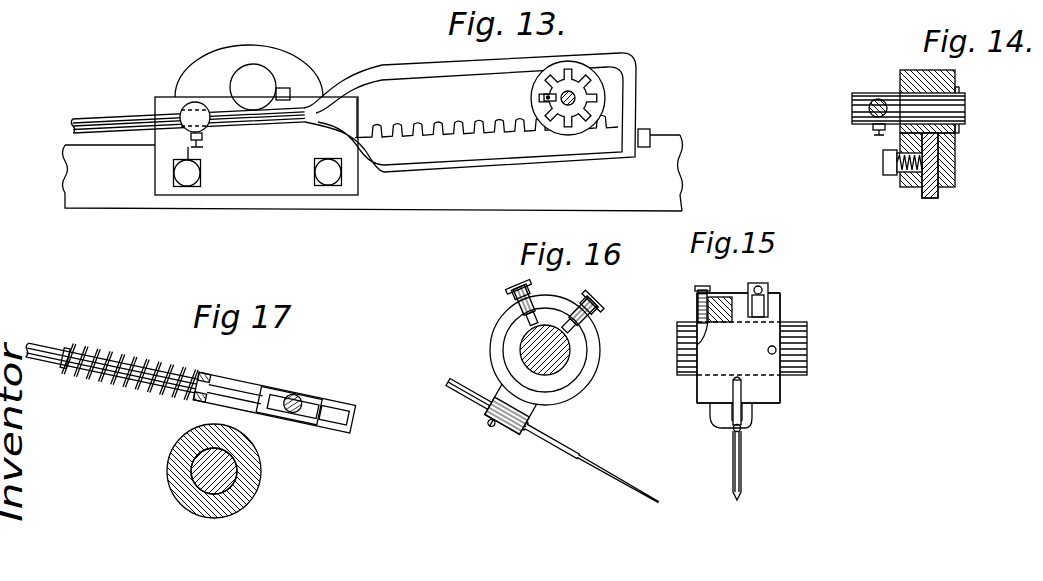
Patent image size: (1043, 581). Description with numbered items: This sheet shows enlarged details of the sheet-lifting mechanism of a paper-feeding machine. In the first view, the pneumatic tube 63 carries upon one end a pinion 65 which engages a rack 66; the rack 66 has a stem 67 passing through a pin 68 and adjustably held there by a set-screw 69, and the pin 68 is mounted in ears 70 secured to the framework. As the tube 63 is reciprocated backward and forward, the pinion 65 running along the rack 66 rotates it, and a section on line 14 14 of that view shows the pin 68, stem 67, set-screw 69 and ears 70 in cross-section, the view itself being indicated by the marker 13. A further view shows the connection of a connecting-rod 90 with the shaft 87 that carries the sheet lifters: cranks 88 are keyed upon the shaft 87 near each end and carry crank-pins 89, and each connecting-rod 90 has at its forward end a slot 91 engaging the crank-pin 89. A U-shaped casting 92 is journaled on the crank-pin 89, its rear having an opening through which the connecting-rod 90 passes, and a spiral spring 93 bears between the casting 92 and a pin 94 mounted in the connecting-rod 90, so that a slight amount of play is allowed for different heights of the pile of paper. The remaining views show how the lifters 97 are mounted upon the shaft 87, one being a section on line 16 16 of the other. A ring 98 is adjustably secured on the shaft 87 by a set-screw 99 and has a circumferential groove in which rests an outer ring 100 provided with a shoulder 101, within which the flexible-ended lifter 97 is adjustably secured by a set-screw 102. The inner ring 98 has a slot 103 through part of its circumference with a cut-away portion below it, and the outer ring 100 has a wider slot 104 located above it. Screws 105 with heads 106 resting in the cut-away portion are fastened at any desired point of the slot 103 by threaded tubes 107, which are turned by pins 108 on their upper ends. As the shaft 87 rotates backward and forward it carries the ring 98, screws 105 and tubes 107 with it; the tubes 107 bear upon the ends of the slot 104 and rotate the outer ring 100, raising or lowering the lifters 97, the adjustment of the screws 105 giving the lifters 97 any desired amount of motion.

In FIG. 13, the section line 13 is at (62, 0).
In FIG. 13, the line 14 14 is at (196, 96).
In FIG. 15, the line 16 16 is at (767, 466).
In FIG. 13, the pneumatic tube 63 is at (580, 68).
In FIG. 13, the pinion 65 is at (590, 97).
In FIG. 13, the rack 66 is at (463, 130).
In FIG. 13, the stem 67 is at (263, 117).
In FIG. 13, the pin 68 is at (184, 110).
In FIG. 14, the pin 68 is at (864, 96).
In FIG. 13, the set-screw 69 is at (203, 143).
In FIG. 14, the set-screw 69 is at (875, 133).
In FIG. 13, the ears 70 is at (256, 120).
In FIG. 14, the ears 70 is at (955, 160).
In FIG. 13, the shaft 87 is at (248, 82).
In FIG. 17, the shaft 87 is at (214, 471).
In FIG. 16, the shaft 87 is at (545, 350).
In FIG. 15, the shaft 87 is at (787, 338).
In FIG. 17, the cranks 88 is at (250, 413).
In FIG. 17, the crank-pins 89 is at (293, 400).
In FIG. 17, the connecting-rods 90 is at (51, 352).
In FIG. 17, the slot 91 is at (333, 412).
In FIG. 17, the U-shaped casting 92 is at (243, 377).
In FIG. 17, the spiral springs 93 is at (138, 358).
In FIG. 17, the pins 94 is at (67, 368).
In FIG. 16, the lifters 97 is at (583, 453).
In FIG. 15, the lifters 97 is at (741, 462).
In FIG. 15, the ring 98 is at (703, 313).
In FIG. 15, the set-screw 99 is at (702, 286).
In FIG. 15, the outer ring 100 is at (713, 300).
In FIG. 16, the shoulder 101 is at (500, 418).
In FIG. 15, the shoulder 101 is at (725, 427).
In FIG. 16, the set-screw 102 is at (498, 437).
In FIG. 15, the set-screw 102 is at (750, 428).
In FIG. 15, the slot 103 is at (762, 318).
In FIG. 16, the slot 104 is at (553, 305).
In FIG. 16, the screws 105 is at (520, 283).
In FIG. 15, the screws 105 is at (760, 282).
In FIG. 16, the heads 106 is at (527, 328).
In FIG. 16, the tubes 107 is at (520, 302).
In FIG. 15, the tubes 107 is at (763, 291).
In FIG. 16, the pins 108 is at (510, 295).